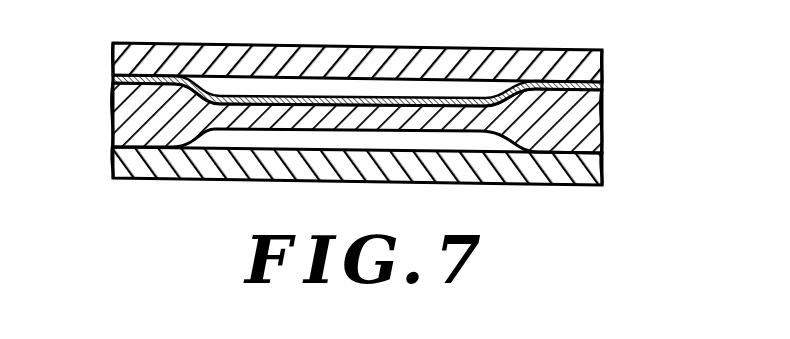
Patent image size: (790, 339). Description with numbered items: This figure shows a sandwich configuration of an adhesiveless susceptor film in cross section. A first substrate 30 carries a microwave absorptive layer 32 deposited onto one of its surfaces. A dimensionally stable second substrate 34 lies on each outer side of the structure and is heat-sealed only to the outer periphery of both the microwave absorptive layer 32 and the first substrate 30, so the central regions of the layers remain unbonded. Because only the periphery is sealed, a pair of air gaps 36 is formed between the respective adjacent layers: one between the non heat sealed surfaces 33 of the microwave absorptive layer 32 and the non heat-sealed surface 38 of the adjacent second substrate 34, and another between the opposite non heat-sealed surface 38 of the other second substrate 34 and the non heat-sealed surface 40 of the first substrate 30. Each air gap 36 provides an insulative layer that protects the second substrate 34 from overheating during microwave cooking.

The first substrate 30 is at (597, 131).
The microwave absorptive layer 32 is at (602, 89).
The non heat sealed surfaces of the microwave absorptive layer 33 is at (115, 113).
The dimensionally stable second substrate 34 is at (601, 52).
The air gap 36 is at (397, 86).
The non heat-sealed surface of the second substrate 38 is at (311, 85).
The non heat-sealed surface of the first substrate 40 is at (366, 130).